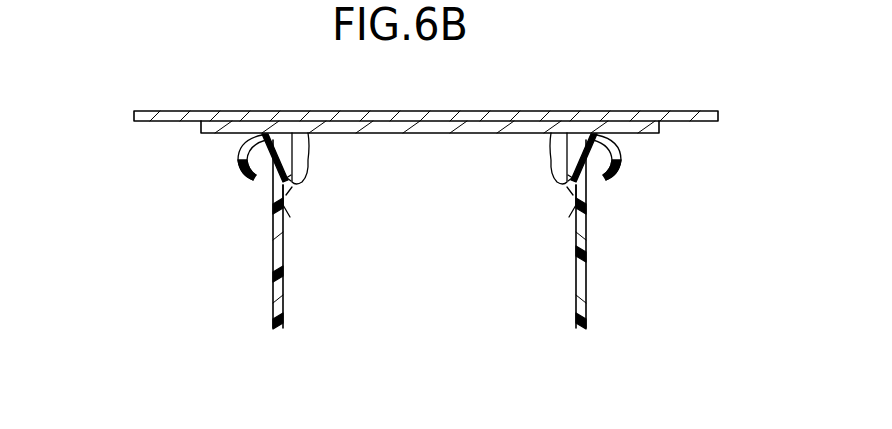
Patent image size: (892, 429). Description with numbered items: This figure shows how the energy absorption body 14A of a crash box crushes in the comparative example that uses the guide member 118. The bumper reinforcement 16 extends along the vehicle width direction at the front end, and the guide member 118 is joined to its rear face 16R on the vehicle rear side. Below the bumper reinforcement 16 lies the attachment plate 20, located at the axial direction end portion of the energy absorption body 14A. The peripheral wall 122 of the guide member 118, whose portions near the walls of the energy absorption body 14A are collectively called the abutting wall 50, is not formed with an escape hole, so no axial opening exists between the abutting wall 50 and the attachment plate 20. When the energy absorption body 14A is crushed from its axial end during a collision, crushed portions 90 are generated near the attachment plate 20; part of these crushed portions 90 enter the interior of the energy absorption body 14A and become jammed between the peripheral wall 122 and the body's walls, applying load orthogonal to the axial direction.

The rear face 16R is at (419, 110).
The bumper reinforcement 16 is at (426, 90).
The attachment plate 20 is at (415, 135).
The energy absorption body 14A is at (588, 278).
The peripheral wall 122 is at (311, 148).
The abutting wall 50 is at (429, 211).
The crushed portions 90 is at (252, 172).
The guide member 118 is at (458, 178).